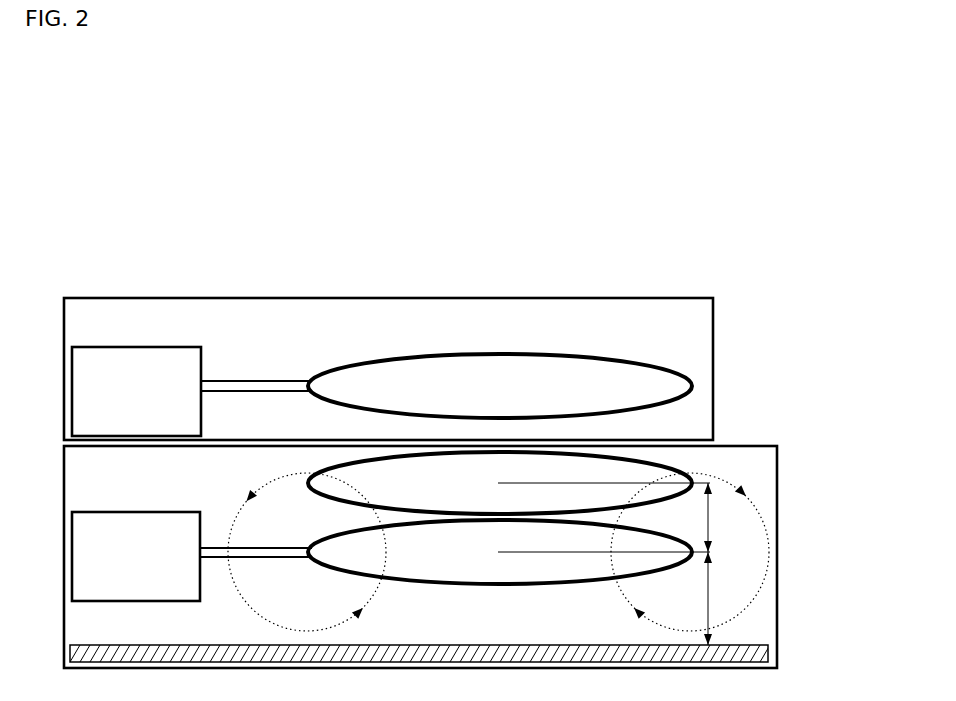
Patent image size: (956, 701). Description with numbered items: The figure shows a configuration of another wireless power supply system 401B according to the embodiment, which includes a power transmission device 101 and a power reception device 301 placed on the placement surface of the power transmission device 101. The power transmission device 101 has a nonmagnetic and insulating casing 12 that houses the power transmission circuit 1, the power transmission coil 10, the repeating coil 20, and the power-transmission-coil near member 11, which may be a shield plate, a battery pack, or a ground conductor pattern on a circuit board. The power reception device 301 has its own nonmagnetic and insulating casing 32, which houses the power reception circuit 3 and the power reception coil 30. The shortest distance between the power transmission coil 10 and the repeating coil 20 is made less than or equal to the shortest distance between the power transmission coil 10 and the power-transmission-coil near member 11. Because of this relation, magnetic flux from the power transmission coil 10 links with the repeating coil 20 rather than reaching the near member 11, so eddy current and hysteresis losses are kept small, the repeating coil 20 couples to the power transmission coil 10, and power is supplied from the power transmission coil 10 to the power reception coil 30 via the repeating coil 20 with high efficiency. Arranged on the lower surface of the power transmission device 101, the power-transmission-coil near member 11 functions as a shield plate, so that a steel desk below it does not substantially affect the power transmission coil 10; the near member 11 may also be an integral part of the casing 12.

The wireless power supply system 401B is at (841, 153).
The power reception device 301 is at (720, 364).
The casing 32 is at (712, 299).
The power reception circuit 3 is at (140, 347).
The power reception coil 30 is at (320, 371).
The power transmission device 101 is at (794, 528).
The casing 12 is at (777, 447).
The power transmission circuit 1 is at (140, 512).
The power transmission coil 10 is at (319, 537).
The repeating coil 20 is at (318, 475).
The power-transmission-coil near member 11 is at (758, 645).